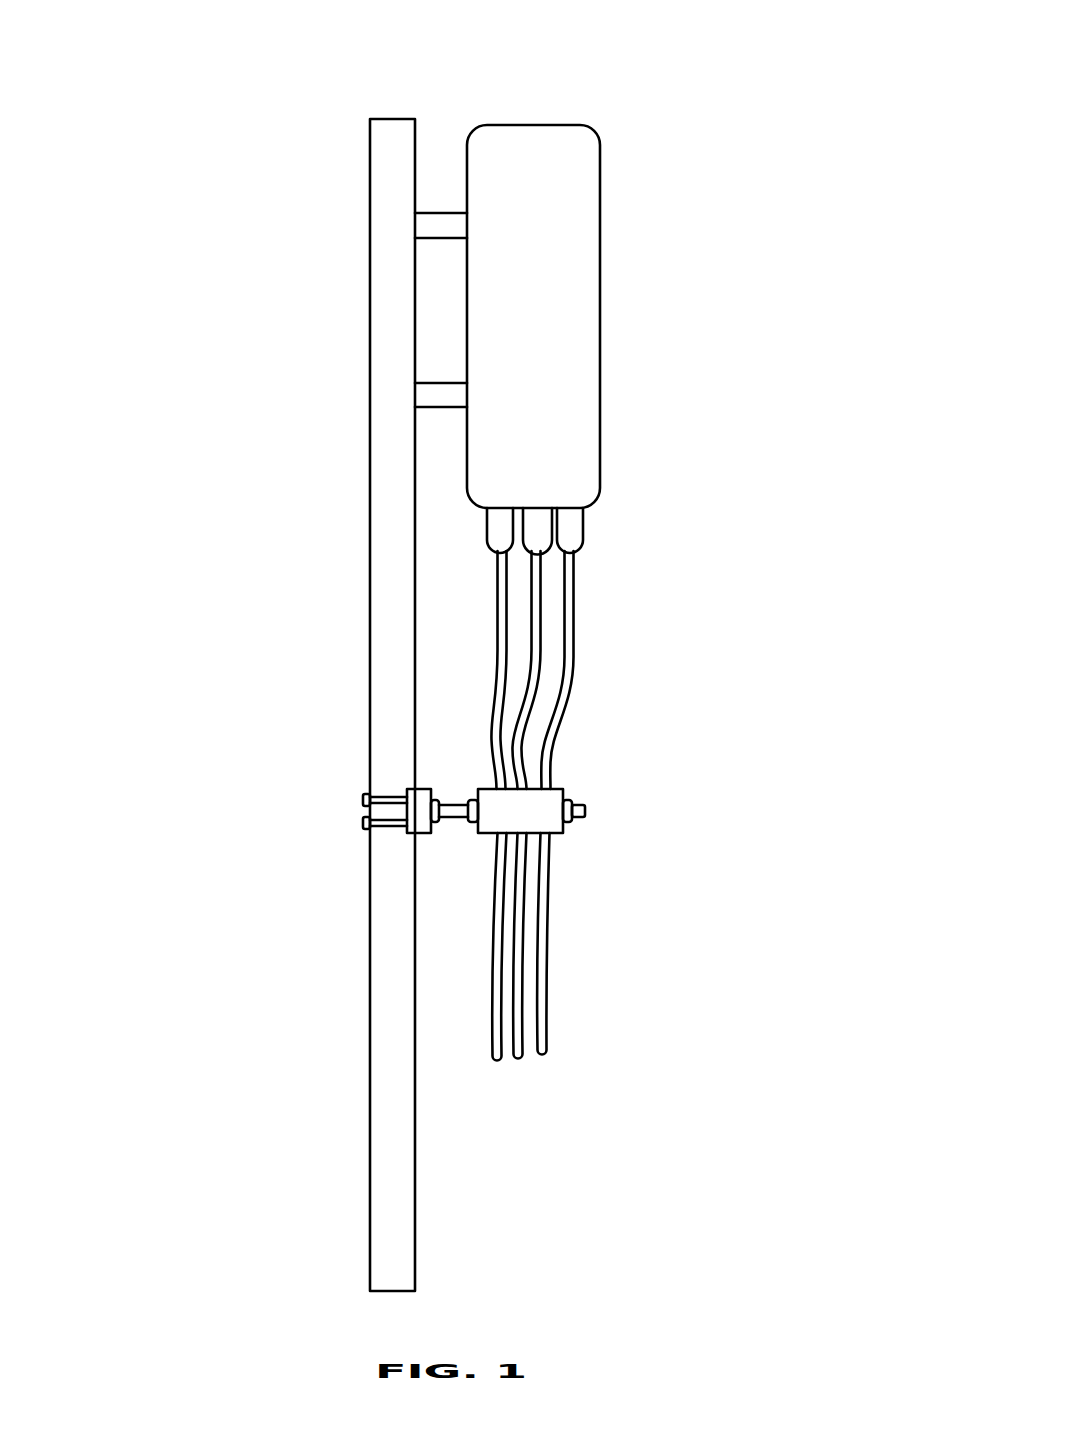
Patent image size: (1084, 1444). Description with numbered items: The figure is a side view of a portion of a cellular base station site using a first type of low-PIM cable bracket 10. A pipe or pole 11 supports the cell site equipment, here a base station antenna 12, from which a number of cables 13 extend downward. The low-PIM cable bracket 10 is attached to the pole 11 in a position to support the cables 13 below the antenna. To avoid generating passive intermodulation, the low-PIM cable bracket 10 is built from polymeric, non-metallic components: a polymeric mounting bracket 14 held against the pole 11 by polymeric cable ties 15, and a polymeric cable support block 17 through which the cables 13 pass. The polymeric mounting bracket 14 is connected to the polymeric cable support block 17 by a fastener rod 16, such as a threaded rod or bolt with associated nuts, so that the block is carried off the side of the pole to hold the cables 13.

The low-PIM cable bracket 10 is at (523, 916).
The pole 11 is at (387, 327).
The base station antenna 12 is at (523, 157).
The cables 13 is at (600, 619).
The polymeric mounting bracket 14 is at (318, 738).
The polymeric cable ties 15 is at (325, 891).
The fastener rod 16 is at (454, 856).
The polymeric cable support block 17 is at (542, 813).